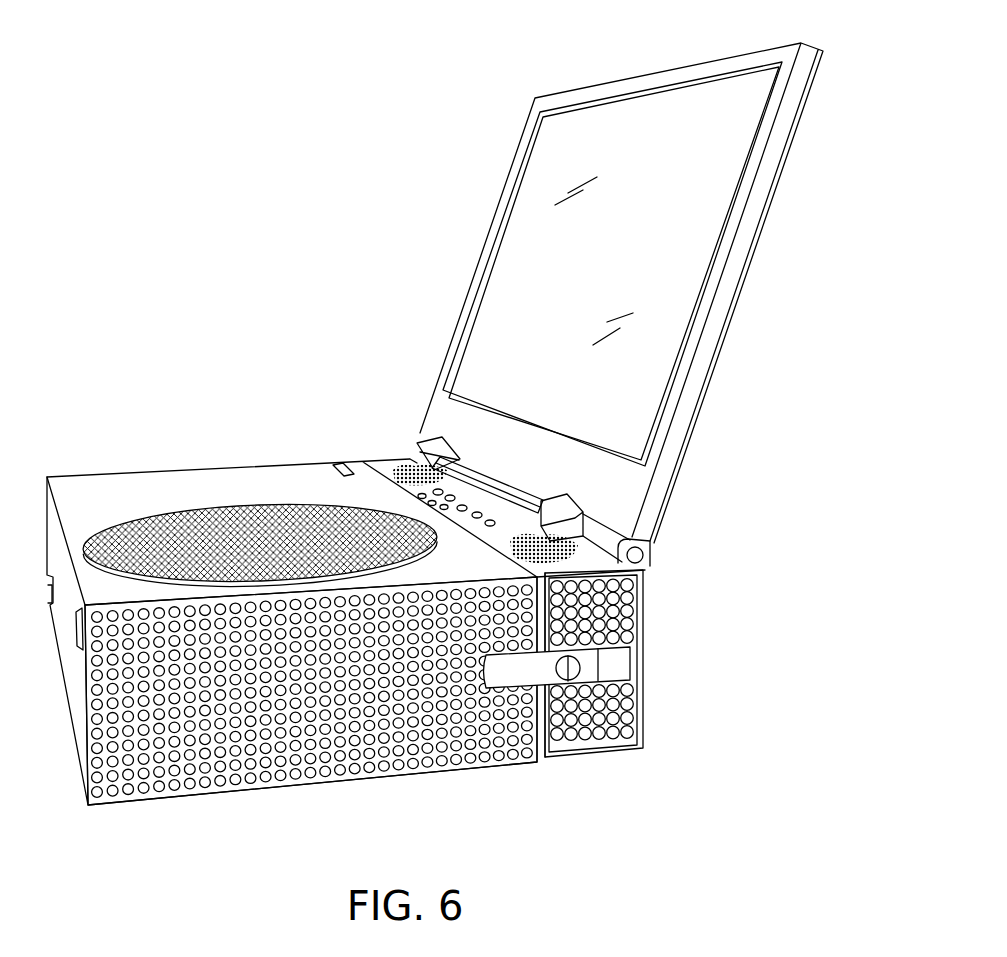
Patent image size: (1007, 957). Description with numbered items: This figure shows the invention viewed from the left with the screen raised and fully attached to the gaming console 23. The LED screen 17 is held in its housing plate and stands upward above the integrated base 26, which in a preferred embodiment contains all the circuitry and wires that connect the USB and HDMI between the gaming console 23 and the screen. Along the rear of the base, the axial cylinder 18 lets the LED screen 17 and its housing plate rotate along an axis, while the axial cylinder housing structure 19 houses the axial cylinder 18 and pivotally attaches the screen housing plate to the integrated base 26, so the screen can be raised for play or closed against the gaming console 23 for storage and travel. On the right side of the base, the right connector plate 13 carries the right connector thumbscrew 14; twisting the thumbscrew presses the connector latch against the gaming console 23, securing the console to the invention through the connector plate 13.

The right connector plate 13 is at (513, 666).
The right connector thumbscrew 14 is at (582, 733).
The LED screen 17 is at (583, 138).
The axial cylinder 18 is at (447, 442).
The axial cylinder housing structure 19 is at (489, 473).
The gaming console 23 is at (205, 708).
The integrated base 26 is at (635, 612).